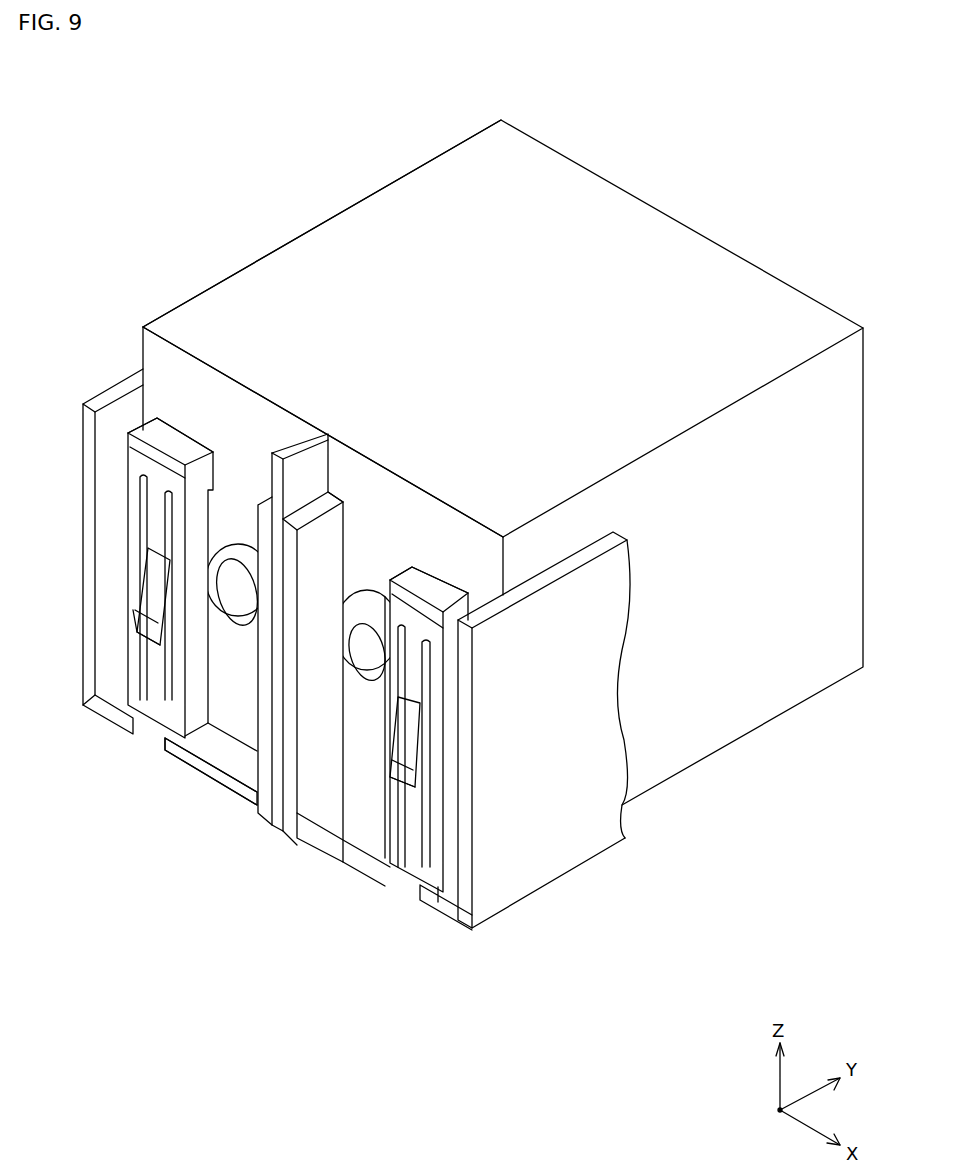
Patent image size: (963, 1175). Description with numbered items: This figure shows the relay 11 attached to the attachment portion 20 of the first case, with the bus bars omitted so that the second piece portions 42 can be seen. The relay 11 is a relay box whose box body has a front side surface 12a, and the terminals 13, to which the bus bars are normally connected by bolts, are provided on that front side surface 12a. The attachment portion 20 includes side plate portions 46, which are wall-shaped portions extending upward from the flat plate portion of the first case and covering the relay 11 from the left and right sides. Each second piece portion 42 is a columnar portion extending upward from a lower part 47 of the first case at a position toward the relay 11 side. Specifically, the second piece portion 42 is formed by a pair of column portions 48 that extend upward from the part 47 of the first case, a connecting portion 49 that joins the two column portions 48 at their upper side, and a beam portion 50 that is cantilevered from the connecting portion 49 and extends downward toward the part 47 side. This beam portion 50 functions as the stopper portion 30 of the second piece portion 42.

The relay 11 is at (690, 265).
The attachment portion 20 is at (290, 242).
The front side surface 12a is at (382, 500).
The terminal 13 is at (232, 553).
The stopper portion 30 is at (148, 650).
The second piece portion 42 is at (178, 438).
The side plate portion 46 is at (110, 393).
The part of the first case 47 is at (208, 752).
The column portion 48 is at (133, 515).
The connecting portion 49 is at (137, 448).
The beam portion 50 is at (133, 598).